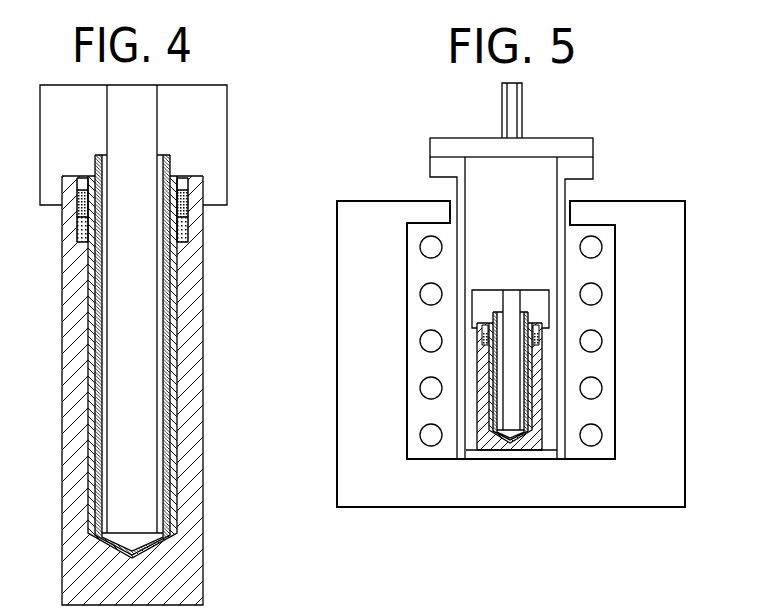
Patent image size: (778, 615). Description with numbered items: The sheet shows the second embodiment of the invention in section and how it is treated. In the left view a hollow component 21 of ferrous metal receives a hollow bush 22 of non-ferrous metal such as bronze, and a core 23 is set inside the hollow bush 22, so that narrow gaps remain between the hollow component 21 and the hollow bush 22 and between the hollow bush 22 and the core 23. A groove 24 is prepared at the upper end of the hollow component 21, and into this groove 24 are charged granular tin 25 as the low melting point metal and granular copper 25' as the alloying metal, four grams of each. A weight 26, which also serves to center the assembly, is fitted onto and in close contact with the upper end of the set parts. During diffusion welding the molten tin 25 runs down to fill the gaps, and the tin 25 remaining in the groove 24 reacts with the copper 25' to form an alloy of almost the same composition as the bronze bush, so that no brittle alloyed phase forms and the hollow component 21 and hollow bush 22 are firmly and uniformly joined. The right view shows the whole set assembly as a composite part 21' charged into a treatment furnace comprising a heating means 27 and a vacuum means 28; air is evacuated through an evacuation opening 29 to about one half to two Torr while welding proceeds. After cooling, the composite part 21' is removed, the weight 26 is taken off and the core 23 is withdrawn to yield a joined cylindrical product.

In FIG. 4, the hollow component 21 is at (164, 390).
In FIG. 4, the hollow bush 22 is at (172, 365).
In FIG. 4, the core 23 is at (168, 315).
In FIG. 4, the groove 24 is at (183, 183).
In FIG. 4, the tin 25 is at (164, 215).
In FIG. 4, the copper 25' is at (167, 243).
In FIG. 4, the weight 26 is at (212, 115).
In FIG. 5, the heating means 27 is at (662, 220).
In FIG. 5, the vacuum means 28 is at (577, 168).
In FIG. 5, the evacuation opening 29 is at (512, 99).
In FIG. 5, the composite part 21' is at (517, 400).